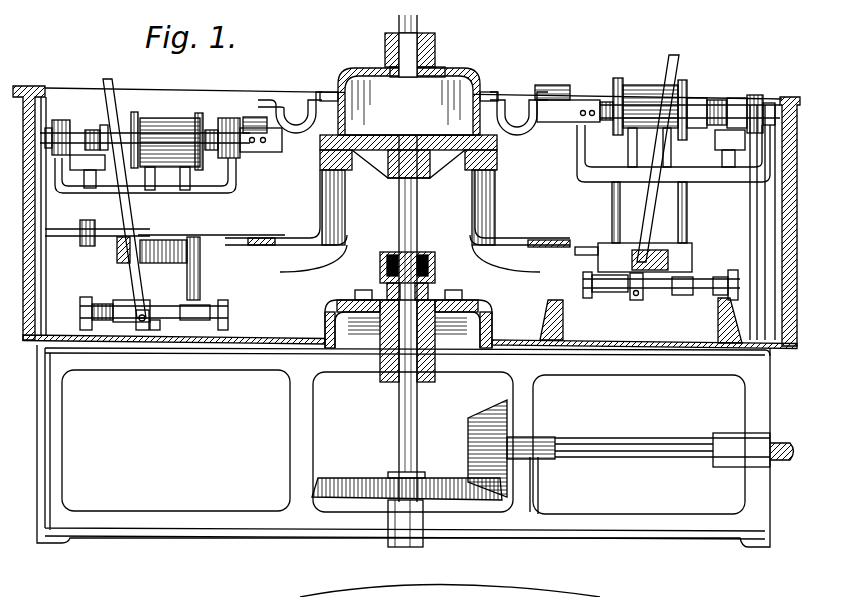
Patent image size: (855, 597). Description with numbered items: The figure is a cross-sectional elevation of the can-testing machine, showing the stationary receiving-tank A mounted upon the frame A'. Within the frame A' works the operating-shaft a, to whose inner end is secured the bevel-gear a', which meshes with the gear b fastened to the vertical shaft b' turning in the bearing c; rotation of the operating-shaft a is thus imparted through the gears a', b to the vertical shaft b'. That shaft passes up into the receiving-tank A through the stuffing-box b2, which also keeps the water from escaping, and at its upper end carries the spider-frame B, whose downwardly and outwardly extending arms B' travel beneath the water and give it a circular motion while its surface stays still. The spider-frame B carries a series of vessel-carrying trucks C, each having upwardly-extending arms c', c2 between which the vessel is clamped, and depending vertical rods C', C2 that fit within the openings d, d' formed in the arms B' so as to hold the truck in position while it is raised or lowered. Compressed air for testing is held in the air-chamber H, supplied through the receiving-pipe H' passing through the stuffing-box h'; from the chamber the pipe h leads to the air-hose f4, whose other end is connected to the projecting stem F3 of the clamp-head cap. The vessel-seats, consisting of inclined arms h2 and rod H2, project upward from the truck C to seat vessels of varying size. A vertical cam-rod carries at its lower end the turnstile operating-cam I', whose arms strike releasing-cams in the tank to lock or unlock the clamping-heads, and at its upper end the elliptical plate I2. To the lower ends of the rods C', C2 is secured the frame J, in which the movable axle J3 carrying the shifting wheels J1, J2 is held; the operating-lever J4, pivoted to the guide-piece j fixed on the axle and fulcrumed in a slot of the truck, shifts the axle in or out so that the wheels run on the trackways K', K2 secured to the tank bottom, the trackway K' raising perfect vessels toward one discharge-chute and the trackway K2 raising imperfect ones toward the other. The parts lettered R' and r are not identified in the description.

The stationary receiving-tank A is at (406, 202).
The frame A' is at (403, 446).
The spider-frame B is at (408, 165).
The arms of spider-frame B' is at (397, 233).
The gear b is at (407, 470).
The vertical shaft b' is at (389, 258).
The stuffing-box b2 is at (436, 272).
The operating-shaft a is at (674, 440).
The bevel-gear a' is at (501, 443).
The bearing c is at (390, 533).
The vessel-carrying truck C is at (412, 174).
The vertical rod C' is at (439, 260).
The vertical rod C2 is at (130, 291).
The upwardly-extending arm c2 is at (238, 172).
The upwardly-extending arm c' is at (787, 175).
The opening d is at (201, 241).
The opening d' is at (225, 225).
The projecting stem F3 is at (251, 116).
The air-hose f4 is at (283, 100).
The air-chamber H is at (409, 101).
The receiving-pipe H' is at (432, 47).
The pipe h is at (410, 76).
The stuffing-box h' is at (369, 45).
The inclined arms h2 is at (182, 115).
The rod H2 is at (190, 173).
The operating-cam I' is at (97, 240).
The plate I2 is at (728, 145).
The frame J is at (166, 300).
The shifting wheel J1 is at (70, 322).
The shifting wheel J2 is at (229, 318).
The axle J3 is at (663, 298).
The operating-lever J4 is at (112, 80).
The guide-piece j is at (146, 310).
The trackway K' is at (716, 320).
The trackway K2 is at (548, 306).
The armature R' is at (409, 113).
The lever pivot r is at (154, 332).